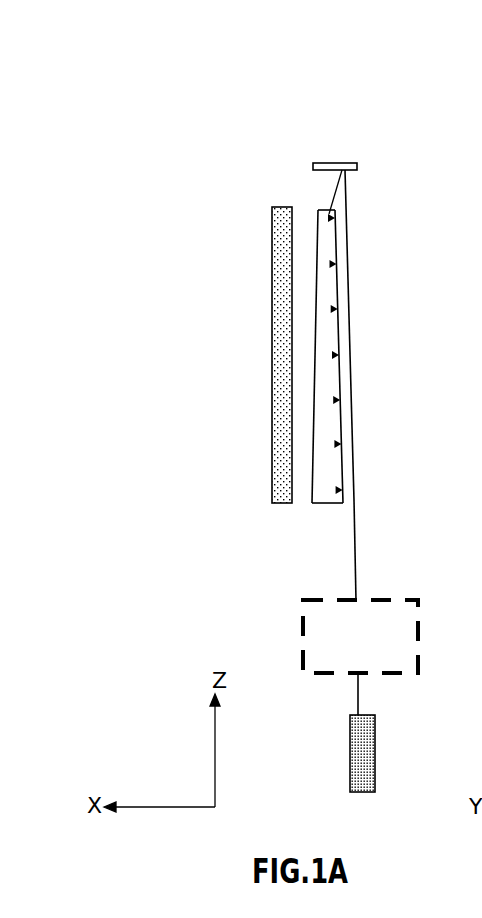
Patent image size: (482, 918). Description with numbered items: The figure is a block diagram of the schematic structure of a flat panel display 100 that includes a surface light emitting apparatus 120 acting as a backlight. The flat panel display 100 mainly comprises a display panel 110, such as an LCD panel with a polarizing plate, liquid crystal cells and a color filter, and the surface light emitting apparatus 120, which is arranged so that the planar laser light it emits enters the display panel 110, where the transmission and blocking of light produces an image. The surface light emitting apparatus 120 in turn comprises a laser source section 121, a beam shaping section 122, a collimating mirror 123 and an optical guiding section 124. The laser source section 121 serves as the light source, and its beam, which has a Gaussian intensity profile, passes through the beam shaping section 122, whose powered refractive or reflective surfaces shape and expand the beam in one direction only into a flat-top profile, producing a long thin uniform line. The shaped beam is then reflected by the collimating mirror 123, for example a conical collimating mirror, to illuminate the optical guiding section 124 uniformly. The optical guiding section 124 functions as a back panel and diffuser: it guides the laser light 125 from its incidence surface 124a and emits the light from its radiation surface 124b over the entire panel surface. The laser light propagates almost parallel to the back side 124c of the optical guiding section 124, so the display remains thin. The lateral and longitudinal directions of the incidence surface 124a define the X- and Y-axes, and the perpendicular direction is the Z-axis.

The flat panel display 100 is at (214, 146).
The display panel 110 is at (280, 333).
The surface light emitting apparatus 120 is at (393, 299).
The laser source section 121 is at (376, 748).
The beam shaping section 122 is at (421, 616).
The collimating mirror 123 is at (336, 163).
The optical guiding section 124 is at (332, 504).
The incidence surface 124a is at (325, 209).
The radiation surface 124b is at (311, 473).
The back side 124c is at (347, 412).
The laser light 125 is at (356, 548).